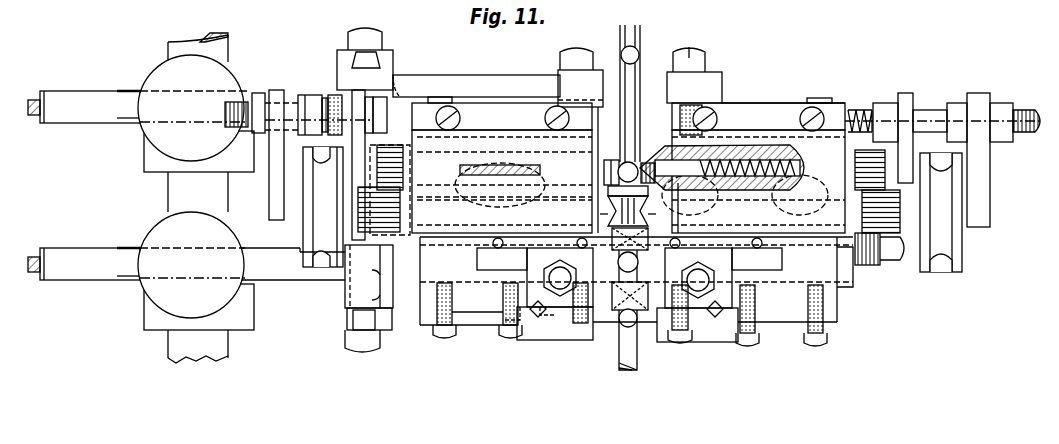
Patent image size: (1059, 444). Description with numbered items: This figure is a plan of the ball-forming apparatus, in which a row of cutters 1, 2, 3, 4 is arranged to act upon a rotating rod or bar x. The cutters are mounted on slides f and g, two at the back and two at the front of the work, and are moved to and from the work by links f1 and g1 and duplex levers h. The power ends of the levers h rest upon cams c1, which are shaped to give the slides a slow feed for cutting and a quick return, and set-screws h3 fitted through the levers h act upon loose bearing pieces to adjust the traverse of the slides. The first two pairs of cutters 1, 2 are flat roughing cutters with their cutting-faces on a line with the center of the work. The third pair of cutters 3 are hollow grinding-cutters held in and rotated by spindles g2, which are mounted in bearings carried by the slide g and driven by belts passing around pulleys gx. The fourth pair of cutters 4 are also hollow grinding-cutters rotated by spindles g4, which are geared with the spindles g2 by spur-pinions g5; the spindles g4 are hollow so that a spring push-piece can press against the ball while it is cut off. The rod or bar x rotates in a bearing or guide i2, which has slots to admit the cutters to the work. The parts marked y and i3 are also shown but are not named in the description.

The duplex lever h is at (186, 185).
The set-screw h3 is at (196, 198).
The cam c1 is at (130, 86).
The pulley gx is at (632, 181).
The spur-pinion g5 is at (440, 183).
The link f1 is at (328, 62).
The link g1 is at (619, 77).
The slide g is at (607, 169).
The cutter-spindle g4 is at (686, 167).
The rod y is at (619, 89).
The fourth pair of cutters 4 is at (610, 162).
The spindle g2 is at (624, 206).
The third pair of cutters 3 is at (628, 222).
The bearing or guide i2 is at (629, 277).
The forming or roughing cutter 2 is at (627, 262).
The forming or roughing cutter 1 is at (628, 321).
The rod or bar x is at (625, 348).
The rod i3 is at (504, 195).
The slide f is at (636, 291).